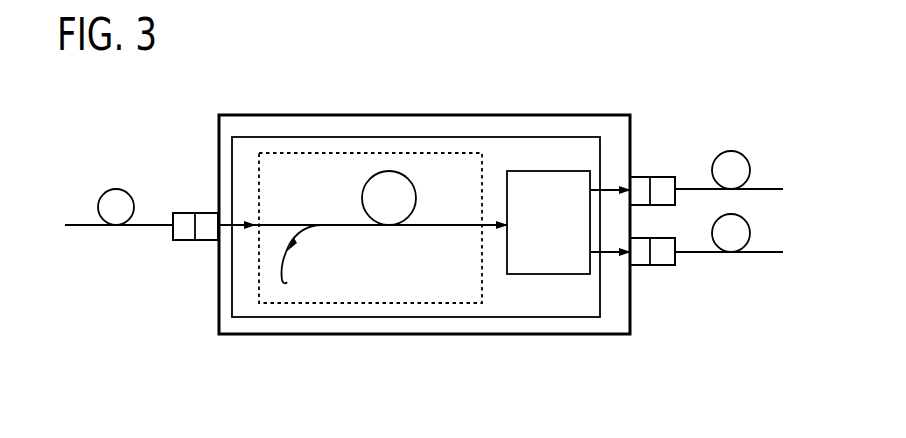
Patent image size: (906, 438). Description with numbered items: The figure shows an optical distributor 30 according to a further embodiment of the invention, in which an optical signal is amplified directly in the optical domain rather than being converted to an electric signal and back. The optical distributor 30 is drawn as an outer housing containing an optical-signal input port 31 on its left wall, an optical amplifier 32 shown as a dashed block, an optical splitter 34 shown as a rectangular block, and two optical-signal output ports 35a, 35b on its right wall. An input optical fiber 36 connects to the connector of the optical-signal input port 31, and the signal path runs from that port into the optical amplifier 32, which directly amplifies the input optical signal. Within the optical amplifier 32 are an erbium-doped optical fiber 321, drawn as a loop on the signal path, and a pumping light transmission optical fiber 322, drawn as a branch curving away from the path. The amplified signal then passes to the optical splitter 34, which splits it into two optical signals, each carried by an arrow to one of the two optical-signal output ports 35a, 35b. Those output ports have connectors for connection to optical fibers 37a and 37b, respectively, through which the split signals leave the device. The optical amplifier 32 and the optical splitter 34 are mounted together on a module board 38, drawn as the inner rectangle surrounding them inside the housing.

The optical distributor 30 is at (285, 115).
The optical-signal input port 31 is at (187, 213).
The optical amplifier 32 is at (352, 153).
The erbium-doped optical fiber 321 is at (389, 225).
The pumping light transmission optical fiber 322 is at (284, 276).
The optical splitter 34 is at (580, 171).
The optical-signal output port 35a is at (640, 177).
The optical-signal output port 35b is at (642, 265).
The optical fiber 36 is at (116, 189).
The optical fiber 37a is at (731, 151).
The optical fiber 37b is at (731, 252).
The module board 38 is at (530, 137).